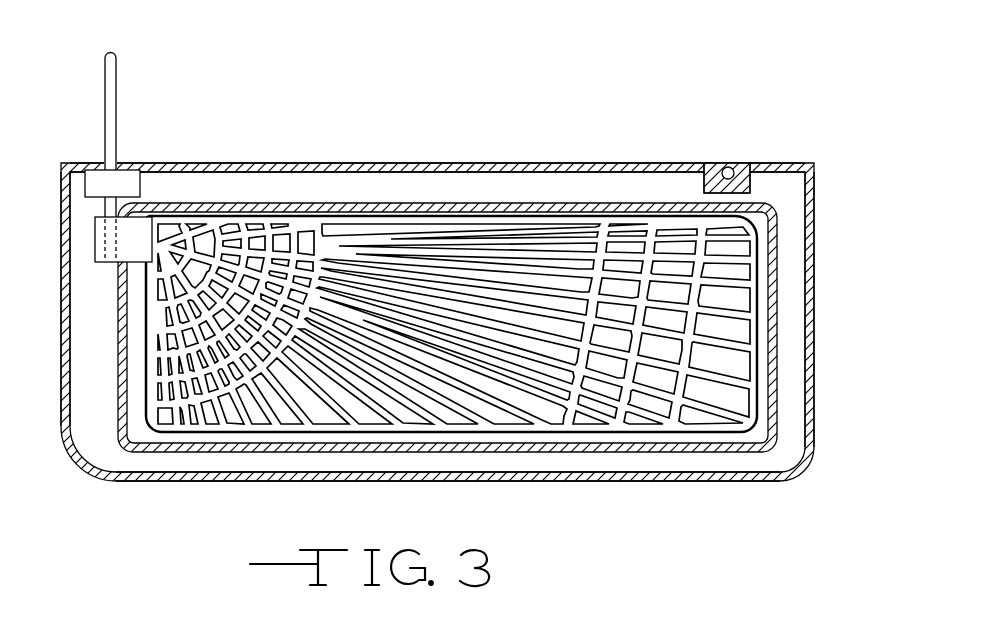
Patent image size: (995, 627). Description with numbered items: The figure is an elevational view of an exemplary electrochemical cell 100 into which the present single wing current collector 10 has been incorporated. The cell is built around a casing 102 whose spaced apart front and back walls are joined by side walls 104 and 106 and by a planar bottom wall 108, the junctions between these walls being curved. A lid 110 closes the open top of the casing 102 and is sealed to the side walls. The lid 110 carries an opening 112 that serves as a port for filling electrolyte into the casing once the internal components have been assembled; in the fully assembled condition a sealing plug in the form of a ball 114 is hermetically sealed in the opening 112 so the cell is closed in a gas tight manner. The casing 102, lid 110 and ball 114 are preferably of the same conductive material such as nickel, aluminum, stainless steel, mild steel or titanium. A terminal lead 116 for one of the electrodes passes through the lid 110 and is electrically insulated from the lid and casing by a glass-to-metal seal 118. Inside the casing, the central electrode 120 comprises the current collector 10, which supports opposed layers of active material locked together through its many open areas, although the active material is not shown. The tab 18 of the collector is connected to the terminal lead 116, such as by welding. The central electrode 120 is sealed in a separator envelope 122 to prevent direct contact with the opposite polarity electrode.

The electrochemical cell 100 is at (461, 283).
The casing 102 is at (814, 297).
The side wall 104 is at (814, 229).
The side wall 106 is at (57, 360).
The bottom wall 108 is at (680, 482).
The lid 110 is at (438, 162).
The opening 112 is at (736, 167).
The ball 114 is at (728, 165).
The terminal lead 116 is at (117, 77).
The glass-to-metal seal 118 is at (127, 180).
The tab 18 is at (93, 233).
The current collector 10 is at (320, 224).
The central electrode 120 is at (148, 430).
The separator envelope 122 is at (226, 453).